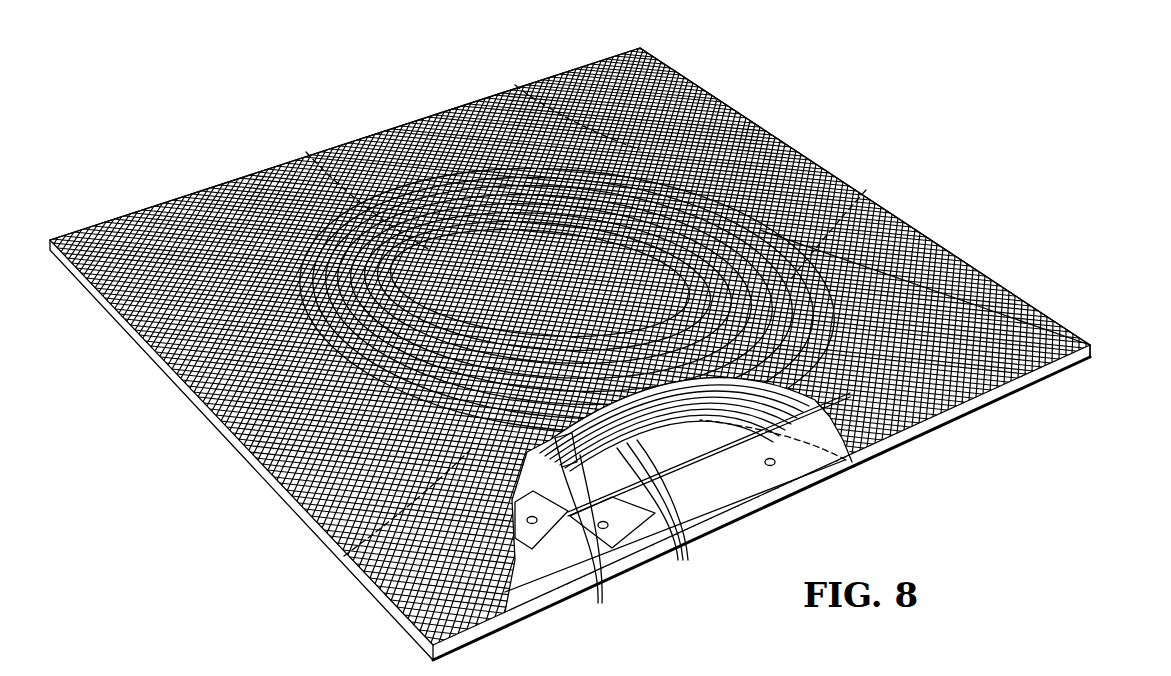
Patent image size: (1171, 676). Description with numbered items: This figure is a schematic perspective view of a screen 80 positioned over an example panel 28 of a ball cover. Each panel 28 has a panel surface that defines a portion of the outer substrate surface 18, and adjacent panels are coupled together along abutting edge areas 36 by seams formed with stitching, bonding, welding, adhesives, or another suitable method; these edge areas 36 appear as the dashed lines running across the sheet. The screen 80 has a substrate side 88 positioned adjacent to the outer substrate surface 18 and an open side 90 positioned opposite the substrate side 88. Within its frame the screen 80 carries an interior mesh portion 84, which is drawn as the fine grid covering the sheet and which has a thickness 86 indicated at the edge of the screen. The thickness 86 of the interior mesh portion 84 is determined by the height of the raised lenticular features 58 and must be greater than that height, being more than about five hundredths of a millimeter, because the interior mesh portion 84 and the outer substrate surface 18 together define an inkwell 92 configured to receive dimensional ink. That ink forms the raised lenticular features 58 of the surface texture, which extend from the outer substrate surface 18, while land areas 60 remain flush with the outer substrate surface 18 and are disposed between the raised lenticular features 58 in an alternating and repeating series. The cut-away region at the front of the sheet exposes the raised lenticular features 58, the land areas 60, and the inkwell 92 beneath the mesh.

The screen 80 is at (952, 298).
The open side 90 is at (1034, 338).
The thickness 86 is at (1097, 335).
The substrate side 88 is at (1063, 378).
The panel 28 is at (908, 282).
The interior mesh portion 84 is at (644, 111).
The outer substrate surface 18 is at (578, 308).
The abutting edge areas 36 is at (515, 85).
The inkwell 92 is at (688, 412).
The raised lenticular features 58 is at (658, 514).
The land areas 60 is at (588, 541).